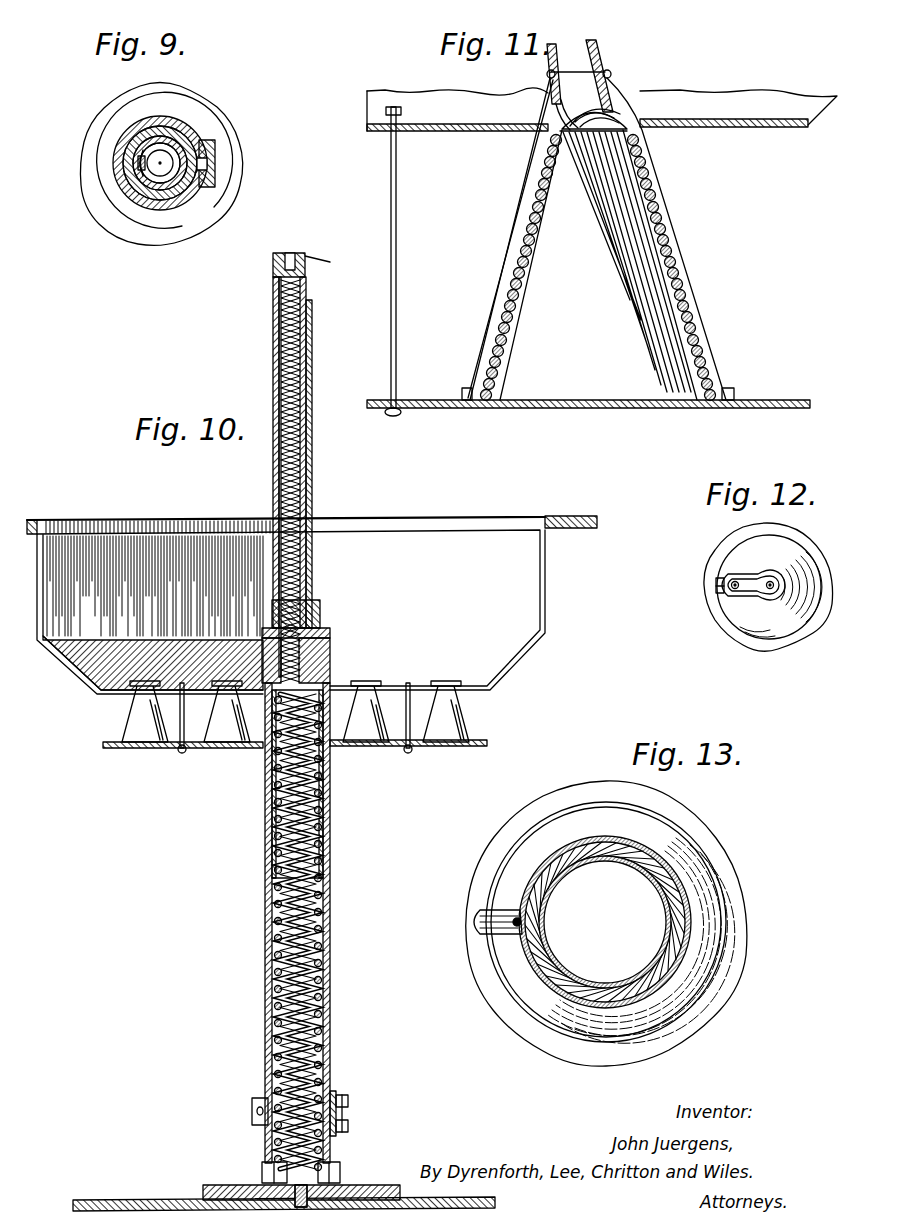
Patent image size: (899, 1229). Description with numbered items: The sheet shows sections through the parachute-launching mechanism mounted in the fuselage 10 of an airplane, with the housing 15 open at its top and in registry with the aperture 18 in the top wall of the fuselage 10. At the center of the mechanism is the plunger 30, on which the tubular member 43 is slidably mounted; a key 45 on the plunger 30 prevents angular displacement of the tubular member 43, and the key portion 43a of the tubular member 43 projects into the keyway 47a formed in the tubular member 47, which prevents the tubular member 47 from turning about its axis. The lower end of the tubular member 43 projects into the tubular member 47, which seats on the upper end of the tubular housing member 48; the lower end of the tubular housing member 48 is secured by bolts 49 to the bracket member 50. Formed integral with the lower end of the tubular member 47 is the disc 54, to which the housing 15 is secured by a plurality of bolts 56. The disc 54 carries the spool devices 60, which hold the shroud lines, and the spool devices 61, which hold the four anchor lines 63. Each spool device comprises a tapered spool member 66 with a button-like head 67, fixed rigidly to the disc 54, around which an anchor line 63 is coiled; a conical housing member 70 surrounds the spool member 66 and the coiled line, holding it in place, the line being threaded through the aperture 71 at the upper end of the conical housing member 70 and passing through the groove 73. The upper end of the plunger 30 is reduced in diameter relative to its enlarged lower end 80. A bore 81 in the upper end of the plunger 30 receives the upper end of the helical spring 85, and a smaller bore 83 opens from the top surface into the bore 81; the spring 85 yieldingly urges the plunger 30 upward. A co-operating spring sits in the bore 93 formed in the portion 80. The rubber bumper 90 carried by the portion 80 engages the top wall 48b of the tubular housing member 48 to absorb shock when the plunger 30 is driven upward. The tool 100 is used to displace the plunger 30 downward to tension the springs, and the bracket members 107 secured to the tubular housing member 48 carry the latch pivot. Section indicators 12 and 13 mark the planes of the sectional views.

In FIG. 10, the fuselage 10 is at (590, 514).
In FIG. 11, the section line 12 is at (643, 64).
In FIG. 11, the section line 13 is at (732, 276).
In FIG. 11, the housing 15 is at (798, 128).
In FIG. 10, the housing 15 is at (545, 600).
In FIG. 10, the aperture 18 is at (513, 517).
In FIG. 10, the plunger 30 is at (327, 266).
In FIG. 9, the tubular member 43 is at (180, 128).
In FIG. 9, the key portion 43a is at (214, 148).
In FIG. 9, the key 45 is at (200, 160).
In FIG. 10, the key 45 is at (312, 388).
In FIG. 9, the tubular member 47 is at (182, 226).
In FIG. 10, the tubular member 47 is at (322, 606).
In FIG. 9, the keyway 47a is at (212, 172).
In FIG. 10, the tubular housing member 48 is at (332, 890).
In FIG. 10, the top wall 48b is at (332, 636).
In FIG. 10, the bolts 49 is at (262, 1168).
In FIG. 10, the bracket member 50 is at (205, 1185).
In FIG. 9, the disc 54 is at (82, 139).
In FIG. 10, the disc 54 is at (470, 746).
In FIG. 11, the bolts 56 is at (391, 205).
In FIG. 10, the bolts 56 is at (178, 755).
In FIG. 10, the spool devices 60 is at (130, 716).
In FIG. 11, the spool devices 61 is at (655, 170).
In FIG. 10, the spool devices 61 is at (226, 734).
In FIG. 13, the spool devices 61 is at (672, 978).
In FIG. 11, the anchor lines 63 is at (680, 240).
In FIG. 12, the anchor lines 63 is at (772, 602).
In FIG. 13, the anchor lines 63 is at (527, 884).
In FIG. 11, the tapered spool member 66 is at (620, 230).
In FIG. 13, the tapered spool member 66 is at (632, 858).
In FIG. 11, the button-like head 67 is at (600, 118).
In FIG. 11, the conical housing member 70 is at (700, 325).
In FIG. 10, the conical housing member 70 is at (470, 712).
In FIG. 12, the conical housing member 70 is at (800, 640).
In FIG. 13, the conical housing member 70 is at (710, 900).
In FIG. 11, the aperture 71 is at (606, 74).
In FIG. 12, the aperture 71 is at (772, 580).
In FIG. 11, the groove 73 is at (525, 180).
In FIG. 12, the groove 73 is at (735, 590).
In FIG. 13, the groove 73 is at (512, 930).
In FIG. 10, the lower end of the plunger 80 is at (332, 660).
In FIG. 9, the bore 81 is at (140, 188).
In FIG. 10, the bore 81 is at (312, 572).
In FIG. 10, the smaller bore 83 is at (272, 270).
In FIG. 9, the helical spring 85 is at (148, 172).
In FIG. 10, the helical spring 85 is at (312, 470).
In FIG. 10, the rubber bumper 90 is at (262, 664).
In FIG. 10, the bore 93 is at (325, 780).
In FIG. 10, the tool 100 is at (348, 1100).
In FIG. 10, the bracket members 107 is at (336, 1094).